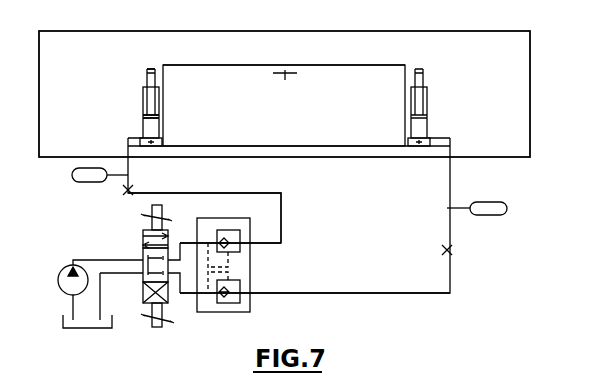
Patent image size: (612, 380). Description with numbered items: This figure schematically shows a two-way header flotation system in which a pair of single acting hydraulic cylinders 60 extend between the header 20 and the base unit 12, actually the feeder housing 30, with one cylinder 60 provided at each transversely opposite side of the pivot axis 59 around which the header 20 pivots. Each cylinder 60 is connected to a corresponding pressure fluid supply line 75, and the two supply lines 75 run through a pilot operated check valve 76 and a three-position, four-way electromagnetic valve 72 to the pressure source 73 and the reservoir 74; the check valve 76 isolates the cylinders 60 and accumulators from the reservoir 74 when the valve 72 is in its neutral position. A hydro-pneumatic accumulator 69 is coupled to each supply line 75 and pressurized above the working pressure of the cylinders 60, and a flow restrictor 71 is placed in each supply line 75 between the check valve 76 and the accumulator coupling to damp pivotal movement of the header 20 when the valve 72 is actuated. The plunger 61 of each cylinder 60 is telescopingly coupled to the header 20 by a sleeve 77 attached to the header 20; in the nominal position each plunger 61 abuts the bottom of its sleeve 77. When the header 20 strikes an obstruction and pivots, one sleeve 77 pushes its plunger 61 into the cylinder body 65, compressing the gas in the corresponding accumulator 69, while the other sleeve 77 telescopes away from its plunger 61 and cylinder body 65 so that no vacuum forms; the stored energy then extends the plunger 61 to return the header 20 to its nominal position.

The base unit 12 is at (365, 65).
The header 20 is at (530, 58).
The feeder housing 30 is at (307, 65).
The pivot axis 59 is at (285, 78).
The single acting cylinder 60 is at (138, 127).
The plunger 61 is at (147, 88).
The cylinder body 65 is at (143, 116).
The hydro-pneumatic accumulator 69 is at (92, 183).
The flow restrictor 71 is at (133, 190).
The valve 72 is at (158, 328).
The pressure source 73 is at (58, 280).
The reservoir 74 is at (82, 330).
The pressure fluid supply line 75 is at (283, 220).
The pilot operated check valve 76 is at (250, 268).
The sleeve 77 is at (147, 70).